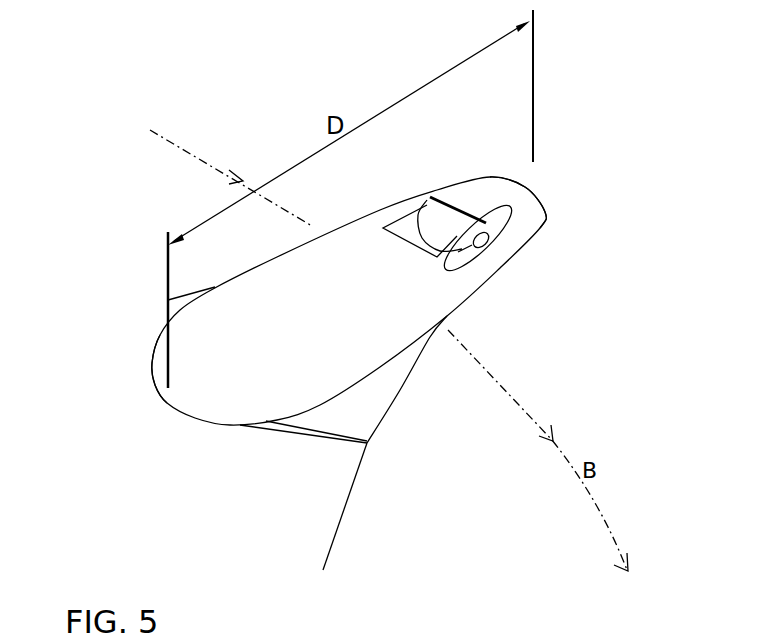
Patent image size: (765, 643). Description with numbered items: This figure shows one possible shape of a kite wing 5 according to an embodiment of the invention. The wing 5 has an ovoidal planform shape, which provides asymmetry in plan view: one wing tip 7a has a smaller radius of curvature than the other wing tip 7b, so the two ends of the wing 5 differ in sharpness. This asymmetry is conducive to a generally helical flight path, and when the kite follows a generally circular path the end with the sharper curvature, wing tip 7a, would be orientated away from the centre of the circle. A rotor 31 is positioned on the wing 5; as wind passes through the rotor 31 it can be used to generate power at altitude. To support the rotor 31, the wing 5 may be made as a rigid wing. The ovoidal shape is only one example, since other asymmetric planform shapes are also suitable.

The wing 5 is at (168, 300).
The wing tip 7a is at (167, 407).
The wing tip 7b is at (532, 189).
The rotor 31 is at (512, 223).